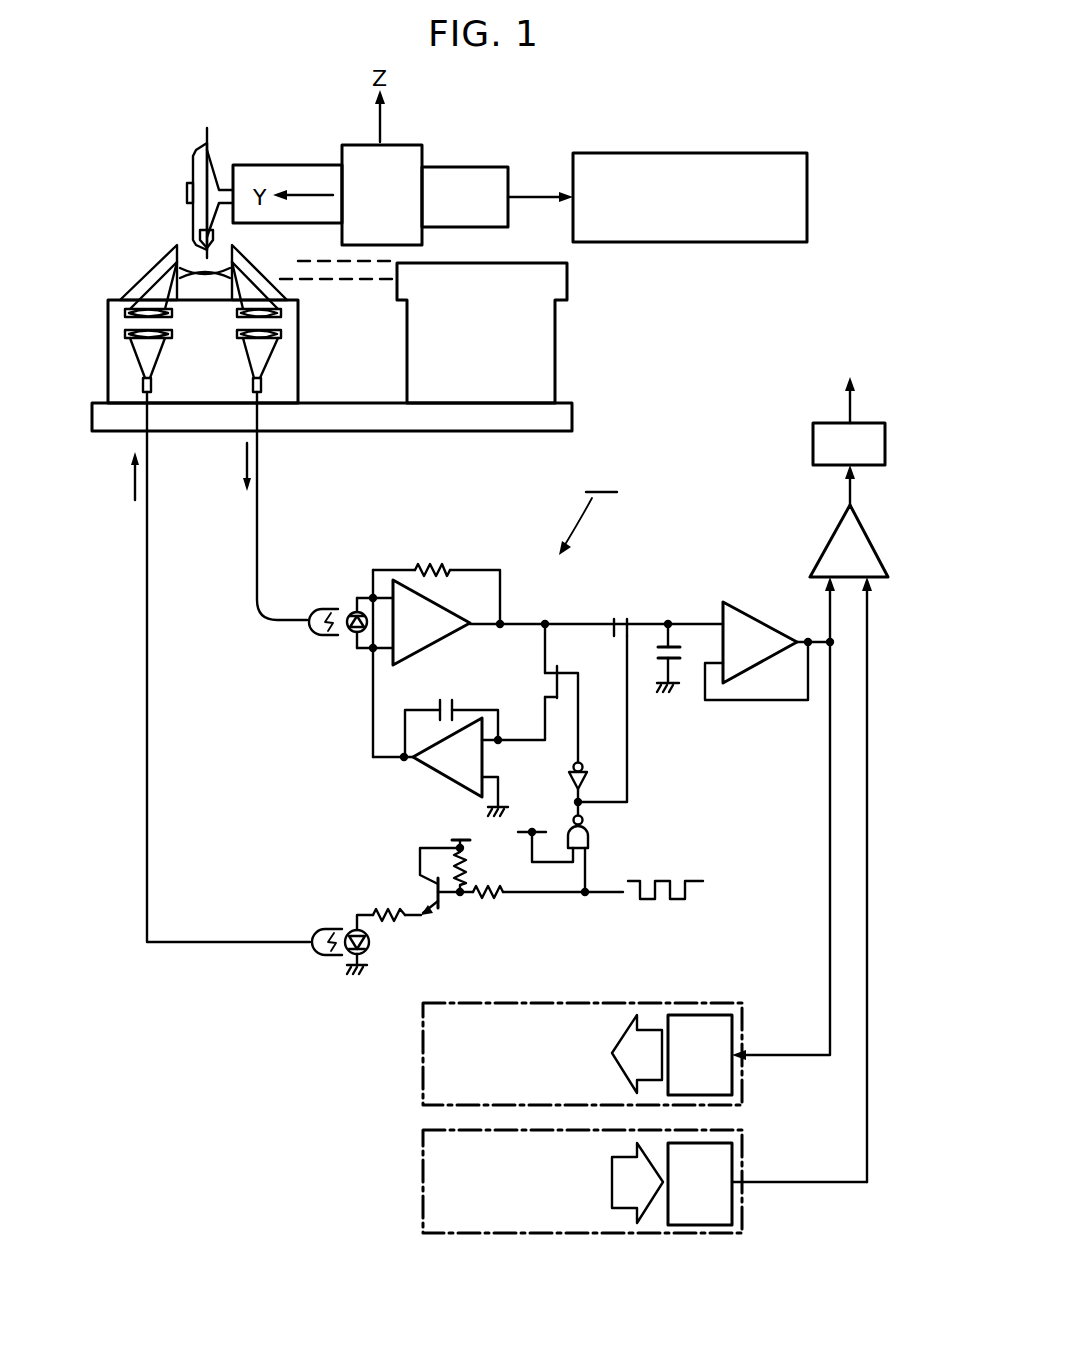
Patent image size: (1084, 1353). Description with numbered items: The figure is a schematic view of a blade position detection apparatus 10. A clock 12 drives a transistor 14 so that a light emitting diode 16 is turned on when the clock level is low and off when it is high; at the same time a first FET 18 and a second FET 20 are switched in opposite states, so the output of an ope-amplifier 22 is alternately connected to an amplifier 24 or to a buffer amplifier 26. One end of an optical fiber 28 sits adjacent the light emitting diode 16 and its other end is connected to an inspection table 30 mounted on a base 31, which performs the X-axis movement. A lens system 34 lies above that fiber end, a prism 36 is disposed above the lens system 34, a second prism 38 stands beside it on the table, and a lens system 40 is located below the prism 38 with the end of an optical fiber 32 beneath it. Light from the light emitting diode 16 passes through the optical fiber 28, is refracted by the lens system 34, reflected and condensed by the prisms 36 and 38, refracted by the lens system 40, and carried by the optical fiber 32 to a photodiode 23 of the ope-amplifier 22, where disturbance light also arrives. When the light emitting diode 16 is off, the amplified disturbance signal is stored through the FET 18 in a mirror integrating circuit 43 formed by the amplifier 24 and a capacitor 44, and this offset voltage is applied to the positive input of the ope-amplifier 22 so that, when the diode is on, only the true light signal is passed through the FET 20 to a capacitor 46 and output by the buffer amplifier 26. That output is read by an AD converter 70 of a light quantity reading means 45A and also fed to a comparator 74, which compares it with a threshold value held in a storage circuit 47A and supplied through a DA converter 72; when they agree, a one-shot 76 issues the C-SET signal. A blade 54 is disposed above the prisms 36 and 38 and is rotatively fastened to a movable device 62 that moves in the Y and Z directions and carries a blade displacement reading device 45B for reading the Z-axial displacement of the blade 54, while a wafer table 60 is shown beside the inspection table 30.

The blade position detection apparatus 10 is at (569, 544).
The clock 12 is at (690, 879).
The transistor 14 is at (418, 858).
The light emitting diode 16 is at (370, 946).
The first FET 18 is at (555, 682).
The second FET 20 is at (613, 638).
The ope-amplifier 22 is at (453, 608).
The photodiode 23 is at (350, 634).
The amplifier 24 is at (484, 768).
The buffer amplifier 26 is at (758, 618).
The optical fiber 28 is at (147, 692).
The inspection table 30 is at (287, 382).
The base 31 is at (460, 431).
The optical fiber 32 is at (257, 553).
The lens system 34 is at (180, 310).
The prism 36 is at (167, 260).
The prism 38 is at (240, 258).
The lens system 40 is at (287, 307).
The mirror integrating circuit 43 is at (445, 727).
The capacitor 44 is at (460, 704).
The light quantity reading means 45A is at (567, 873).
The blade displacement reading device 45B is at (700, 243).
The capacitor 46 is at (683, 660).
The storage circuit 47A is at (586, 1181).
The blade 54 is at (207, 130).
The wafer table 60 is at (557, 348).
The movable device 62 is at (424, 150).
The AD converter 70 is at (723, 1083).
The DA converter 72 is at (723, 1208).
The comparator 74 is at (827, 547).
The one-shot 76 is at (812, 450).